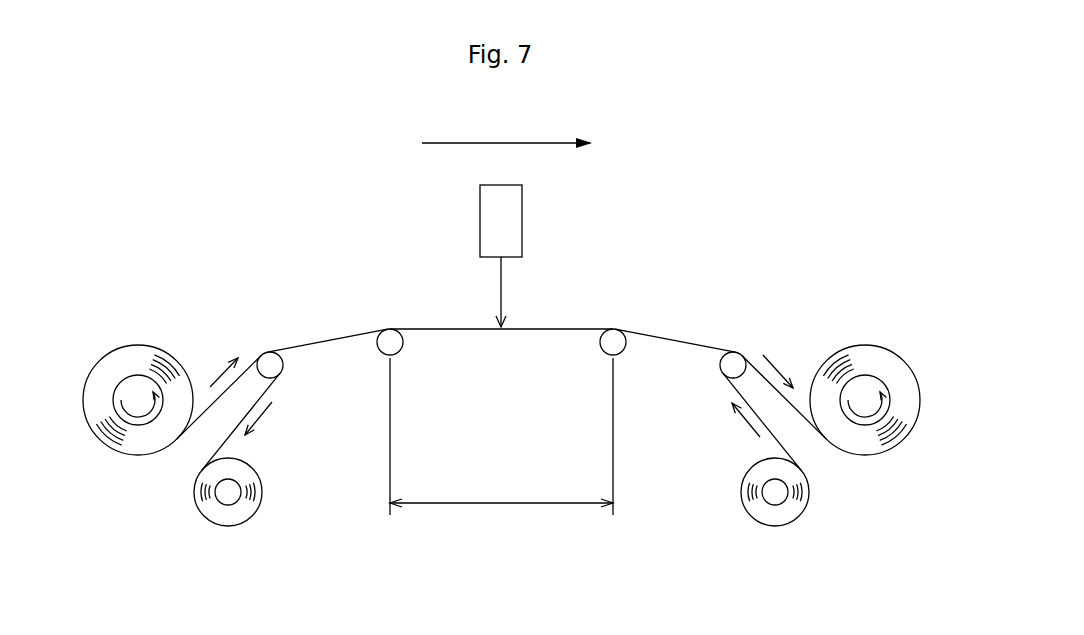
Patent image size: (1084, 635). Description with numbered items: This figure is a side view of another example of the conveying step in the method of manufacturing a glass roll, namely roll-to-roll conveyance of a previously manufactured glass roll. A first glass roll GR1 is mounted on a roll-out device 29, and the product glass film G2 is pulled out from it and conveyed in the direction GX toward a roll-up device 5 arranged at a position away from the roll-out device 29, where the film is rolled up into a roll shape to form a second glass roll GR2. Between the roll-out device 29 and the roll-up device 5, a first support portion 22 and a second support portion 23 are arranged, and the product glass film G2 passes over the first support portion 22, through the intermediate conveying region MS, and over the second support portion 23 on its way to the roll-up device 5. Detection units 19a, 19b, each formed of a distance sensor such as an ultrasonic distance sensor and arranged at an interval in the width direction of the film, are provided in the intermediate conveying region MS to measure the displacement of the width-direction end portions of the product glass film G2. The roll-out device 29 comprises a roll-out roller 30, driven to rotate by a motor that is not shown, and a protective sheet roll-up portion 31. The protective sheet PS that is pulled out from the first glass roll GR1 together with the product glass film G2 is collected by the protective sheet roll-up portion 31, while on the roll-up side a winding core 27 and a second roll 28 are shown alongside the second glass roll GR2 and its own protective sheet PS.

The roll-up device 5 is at (885, 364).
The first detection unit 19a is at (581, 256).
The second detection unit 19b is at (524, 220).
The first support portion 22 is at (384, 346).
The second support portion 23 is at (618, 344).
The winding core 27 is at (865, 383).
The roll 28 is at (758, 532).
The roll-out device 29 is at (117, 365).
The roll-out roller 30 is at (138, 383).
The protective sheet roll-up portion 31 is at (212, 532).
The product glass film G2 is at (322, 338).
The first glass roll GR1 is at (91, 428).
The second glass roll GR2 is at (912, 428).
The protective sheet PS is at (224, 442).
The intermediate conveying region MS is at (501, 436).
The conveying direction GX is at (507, 131).